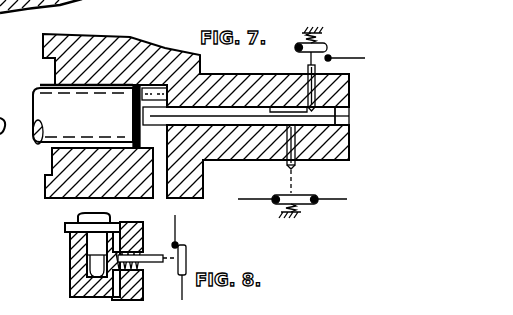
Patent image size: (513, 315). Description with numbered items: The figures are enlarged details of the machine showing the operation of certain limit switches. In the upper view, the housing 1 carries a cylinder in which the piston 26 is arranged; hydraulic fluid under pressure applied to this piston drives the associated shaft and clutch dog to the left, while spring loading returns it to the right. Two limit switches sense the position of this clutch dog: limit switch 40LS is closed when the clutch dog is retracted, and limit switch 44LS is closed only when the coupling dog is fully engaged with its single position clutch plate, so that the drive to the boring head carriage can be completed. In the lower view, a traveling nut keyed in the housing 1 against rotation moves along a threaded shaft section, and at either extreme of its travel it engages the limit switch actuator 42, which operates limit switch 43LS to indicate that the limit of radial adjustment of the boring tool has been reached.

In FIG. 7, the housing 1 is at (147, 48).
In FIG. 8, the housing 1 is at (144, 243).
In FIG. 7, the piston 26 is at (38, 72).
In FIG. 7, the limit switch 40LS is at (304, 54).
In FIG. 7, the limit switch 44LS is at (296, 179).
In FIG. 8, the limit switch actuator 42 is at (66, 226).
In FIG. 8, the limit switch 43LS is at (185, 257).